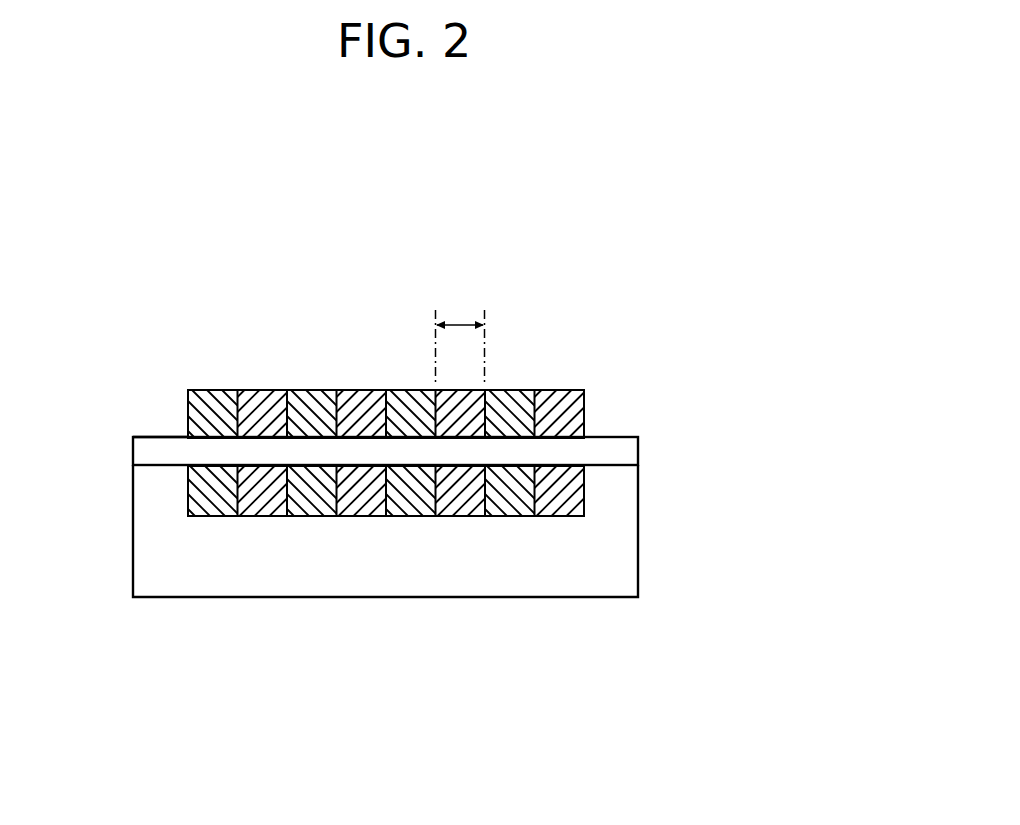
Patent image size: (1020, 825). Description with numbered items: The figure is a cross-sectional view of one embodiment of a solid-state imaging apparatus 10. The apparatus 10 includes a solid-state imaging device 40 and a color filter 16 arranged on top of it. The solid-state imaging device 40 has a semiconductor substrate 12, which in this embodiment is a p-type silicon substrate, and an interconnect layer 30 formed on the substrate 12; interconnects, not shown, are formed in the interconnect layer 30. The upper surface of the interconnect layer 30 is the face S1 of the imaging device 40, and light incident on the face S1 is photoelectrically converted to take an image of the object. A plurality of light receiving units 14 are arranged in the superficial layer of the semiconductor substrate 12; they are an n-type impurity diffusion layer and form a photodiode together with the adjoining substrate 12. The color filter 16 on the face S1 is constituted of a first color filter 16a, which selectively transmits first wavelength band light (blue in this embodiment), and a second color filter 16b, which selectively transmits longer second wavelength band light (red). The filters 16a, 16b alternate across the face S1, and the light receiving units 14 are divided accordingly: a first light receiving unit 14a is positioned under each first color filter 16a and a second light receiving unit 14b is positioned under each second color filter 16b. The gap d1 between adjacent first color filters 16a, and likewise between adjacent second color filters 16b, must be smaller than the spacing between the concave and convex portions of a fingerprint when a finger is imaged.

The solid-state imaging apparatus 10 is at (634, 252).
The semiconductor substrate 12 is at (650, 465).
The light receiving units 14 is at (605, 646).
The first light receiving unit 14a is at (505, 516).
The second light receiving unit 14b is at (558, 516).
The color filter 16 is at (667, 314).
The first color filter 16a is at (510, 388).
The second color filter 16b is at (558, 388).
The interconnect layer 30 is at (650, 437).
The solid-state imaging device 40 is at (715, 437).
The face S1 is at (161, 437).
The gap d1 is at (460, 339).